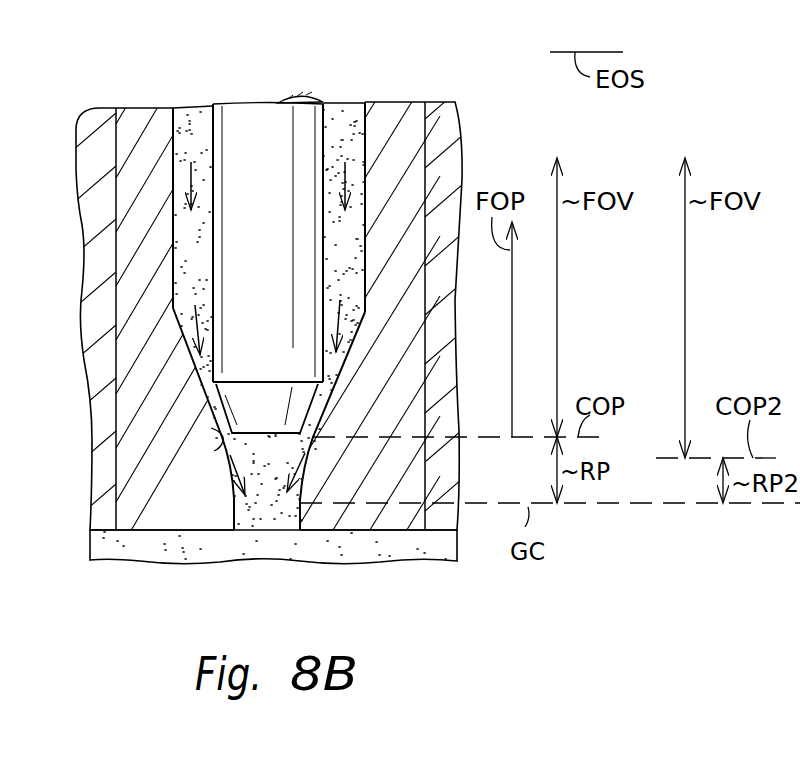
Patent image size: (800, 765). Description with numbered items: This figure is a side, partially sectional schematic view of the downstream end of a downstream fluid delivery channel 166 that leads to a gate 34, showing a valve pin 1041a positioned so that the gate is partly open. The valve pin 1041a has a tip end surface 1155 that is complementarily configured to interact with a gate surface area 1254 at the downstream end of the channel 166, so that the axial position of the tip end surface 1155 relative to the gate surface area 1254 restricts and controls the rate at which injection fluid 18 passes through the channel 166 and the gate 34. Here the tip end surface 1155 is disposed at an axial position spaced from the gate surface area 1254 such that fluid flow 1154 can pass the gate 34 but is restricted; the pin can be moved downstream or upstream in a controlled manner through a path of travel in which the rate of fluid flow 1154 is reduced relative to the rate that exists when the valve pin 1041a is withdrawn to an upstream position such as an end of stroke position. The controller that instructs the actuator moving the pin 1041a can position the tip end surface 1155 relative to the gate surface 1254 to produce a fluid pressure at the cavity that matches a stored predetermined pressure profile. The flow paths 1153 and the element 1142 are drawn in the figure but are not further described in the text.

The downstream fluid delivery channel 166 is at (190, 112).
The valve pin 1041a is at (290, 100).
The injection fluid 18 is at (190, 177).
The flow channel 1153 is at (345, 177).
The valve pin tip end surface 1155 is at (217, 413).
The gate surface area 1254 is at (211, 428).
The fluid flow 1154 is at (207, 453).
The gate 34 is at (262, 535).
The channel wall 1142 is at (297, 437).